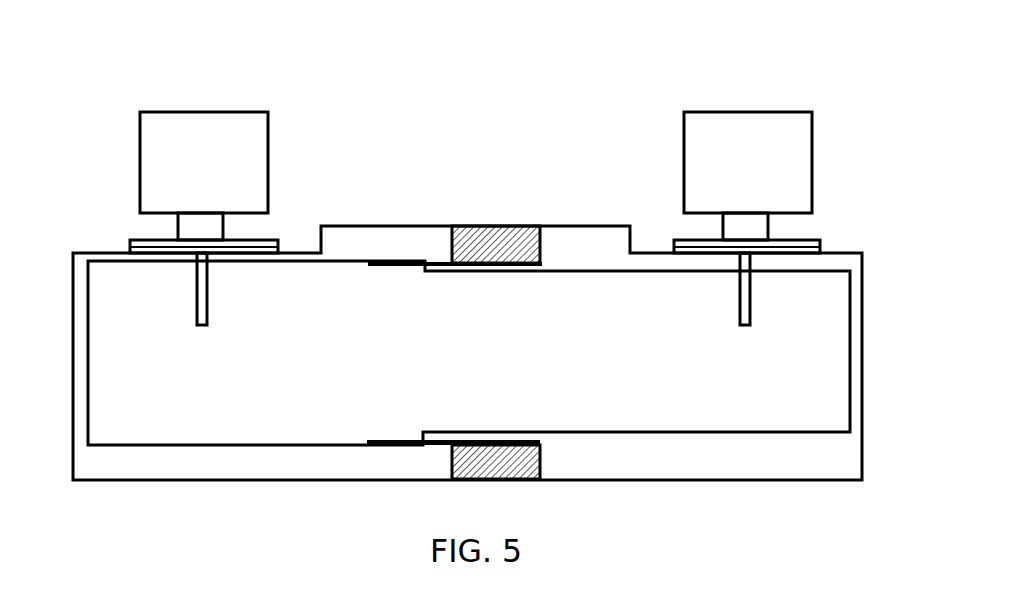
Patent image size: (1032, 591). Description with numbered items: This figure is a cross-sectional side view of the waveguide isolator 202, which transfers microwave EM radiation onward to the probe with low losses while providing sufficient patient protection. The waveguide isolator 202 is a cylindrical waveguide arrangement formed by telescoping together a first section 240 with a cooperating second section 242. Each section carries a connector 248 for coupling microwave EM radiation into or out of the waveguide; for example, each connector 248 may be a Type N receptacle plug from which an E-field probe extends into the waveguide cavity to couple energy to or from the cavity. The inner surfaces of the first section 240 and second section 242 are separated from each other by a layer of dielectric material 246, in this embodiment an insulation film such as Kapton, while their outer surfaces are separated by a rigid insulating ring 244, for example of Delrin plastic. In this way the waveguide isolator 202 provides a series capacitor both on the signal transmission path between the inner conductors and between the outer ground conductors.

The waveguide isolator 202 is at (734, 68).
The first section 240 is at (185, 462).
The second section 242 is at (735, 462).
The rigid insulating ring 244 is at (495, 240).
The layer of dielectric material 246 is at (387, 441).
The connector 248 is at (140, 162).